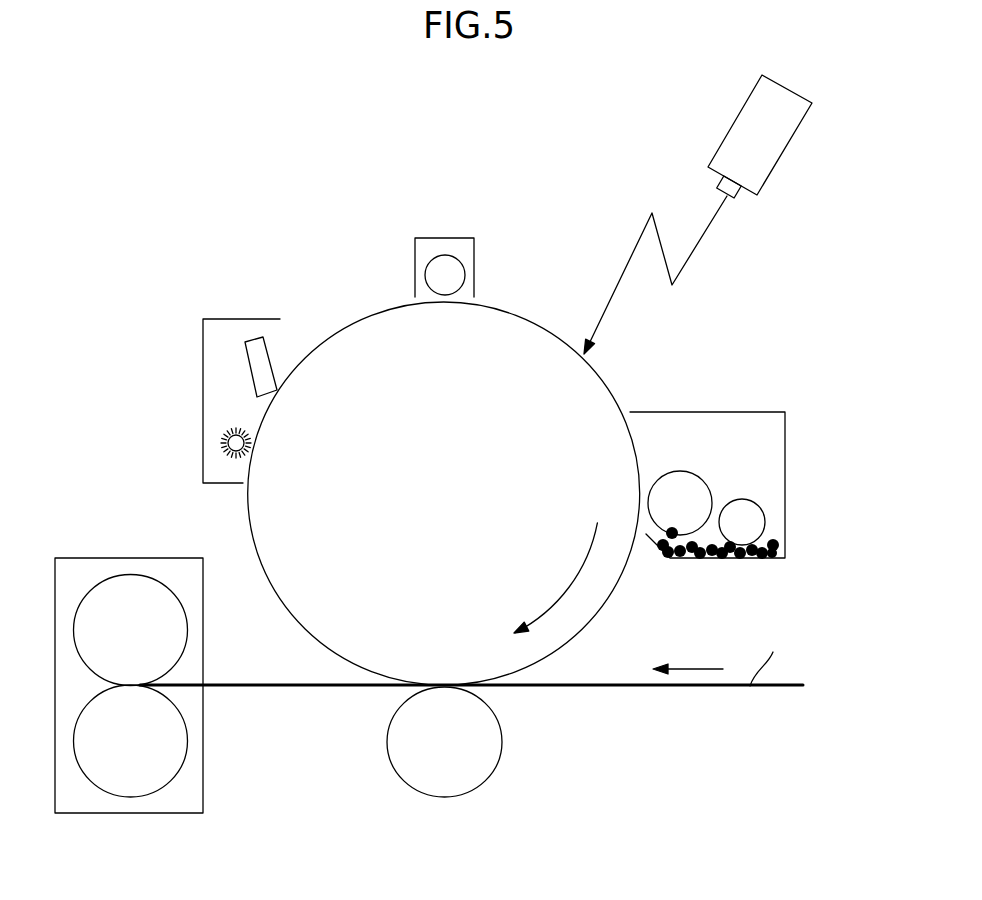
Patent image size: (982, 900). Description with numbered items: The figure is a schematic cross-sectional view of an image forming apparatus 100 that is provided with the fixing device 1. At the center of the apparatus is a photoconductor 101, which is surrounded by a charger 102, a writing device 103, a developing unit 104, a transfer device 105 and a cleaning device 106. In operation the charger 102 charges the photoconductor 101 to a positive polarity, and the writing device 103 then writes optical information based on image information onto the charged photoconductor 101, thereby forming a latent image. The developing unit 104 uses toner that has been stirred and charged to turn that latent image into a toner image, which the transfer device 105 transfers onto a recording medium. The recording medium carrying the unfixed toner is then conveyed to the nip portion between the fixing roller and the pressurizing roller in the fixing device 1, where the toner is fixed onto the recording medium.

The image forming apparatus 100 is at (818, 268).
The photoconductor 101 is at (601, 609).
The charger 102 is at (415, 250).
The writing device 103 is at (798, 93).
The developing unit 104 is at (758, 412).
The transfer device 105 is at (503, 745).
The cleaning device 106 is at (203, 342).
The fixing device 1 is at (203, 790).